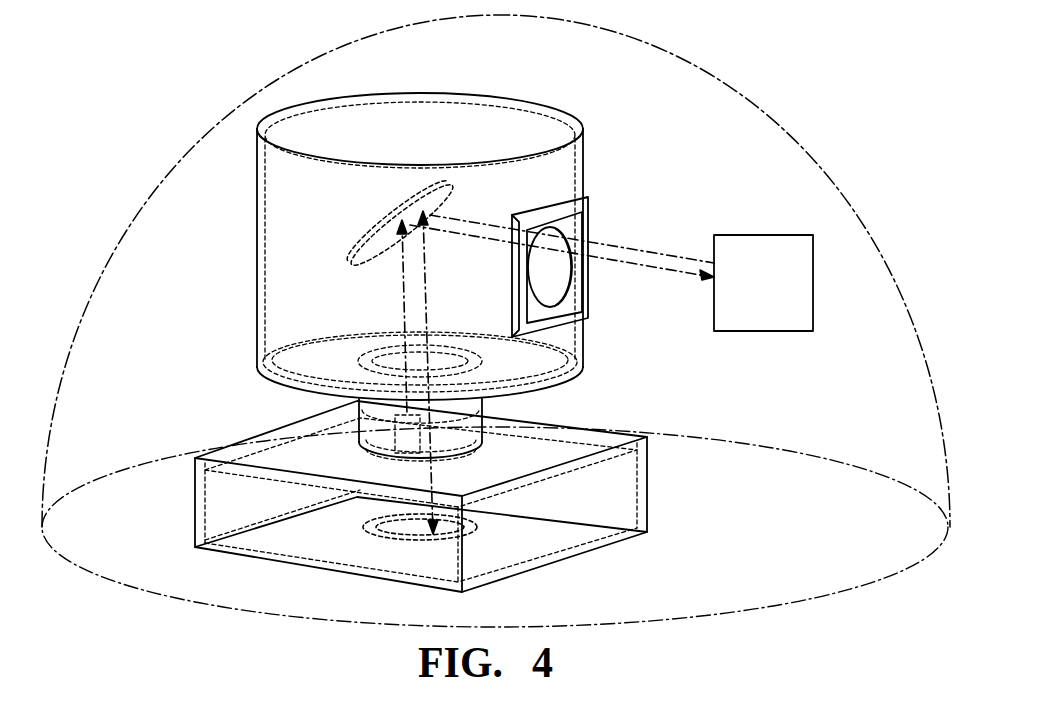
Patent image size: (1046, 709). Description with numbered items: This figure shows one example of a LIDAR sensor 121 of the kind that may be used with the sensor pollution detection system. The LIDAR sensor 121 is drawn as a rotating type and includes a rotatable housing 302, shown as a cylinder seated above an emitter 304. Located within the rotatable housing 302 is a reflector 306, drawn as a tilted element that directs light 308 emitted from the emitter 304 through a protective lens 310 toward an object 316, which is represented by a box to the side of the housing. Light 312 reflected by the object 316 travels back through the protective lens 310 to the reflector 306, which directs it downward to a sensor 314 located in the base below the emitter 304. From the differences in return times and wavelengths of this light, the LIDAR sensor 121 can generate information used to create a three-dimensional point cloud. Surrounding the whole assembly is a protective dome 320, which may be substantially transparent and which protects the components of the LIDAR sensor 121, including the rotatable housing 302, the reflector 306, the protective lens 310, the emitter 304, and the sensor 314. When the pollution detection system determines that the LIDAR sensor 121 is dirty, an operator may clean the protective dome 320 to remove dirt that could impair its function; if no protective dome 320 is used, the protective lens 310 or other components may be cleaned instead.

The LIDAR sensor 121 is at (791, 81).
The rotatable housing 302 is at (292, 287).
The emitter 304 is at (356, 418).
The reflector 306 is at (378, 218).
The light 308 is at (692, 278).
The protective lens 310 is at (543, 283).
The light 312 is at (643, 252).
The sensor 314 is at (380, 512).
The object 316 is at (795, 250).
The protective dome 320 is at (822, 172).